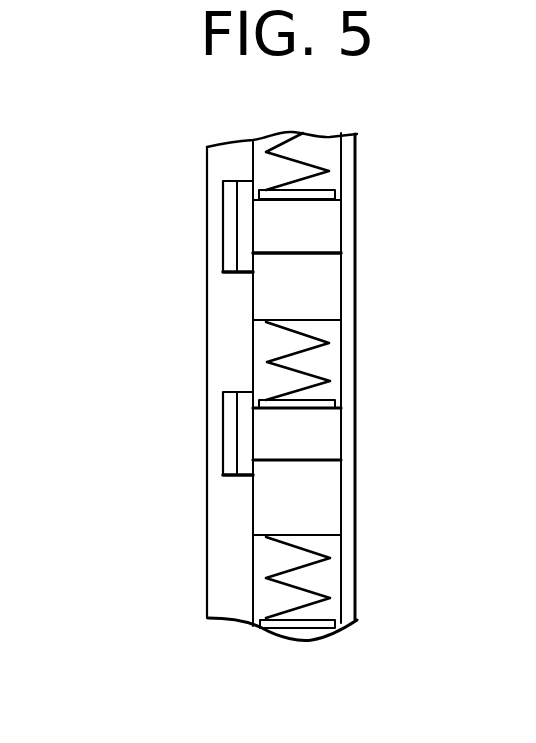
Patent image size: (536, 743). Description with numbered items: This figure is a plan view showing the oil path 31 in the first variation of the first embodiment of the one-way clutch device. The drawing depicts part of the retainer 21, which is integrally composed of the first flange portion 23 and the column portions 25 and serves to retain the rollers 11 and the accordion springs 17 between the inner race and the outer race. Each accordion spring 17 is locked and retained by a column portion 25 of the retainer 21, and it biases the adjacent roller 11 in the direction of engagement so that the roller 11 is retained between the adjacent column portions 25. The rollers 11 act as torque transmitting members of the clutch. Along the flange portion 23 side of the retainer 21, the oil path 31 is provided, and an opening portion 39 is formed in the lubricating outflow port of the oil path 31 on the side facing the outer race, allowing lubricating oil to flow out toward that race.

The roller 11 is at (322, 428).
The accordion spring 17 is at (322, 352).
The retainer 21 is at (207, 553).
The first flange portion 23 is at (233, 592).
The column portion 25 is at (320, 495).
The oil path 31 is at (230, 427).
The opening portion 39 is at (247, 452).